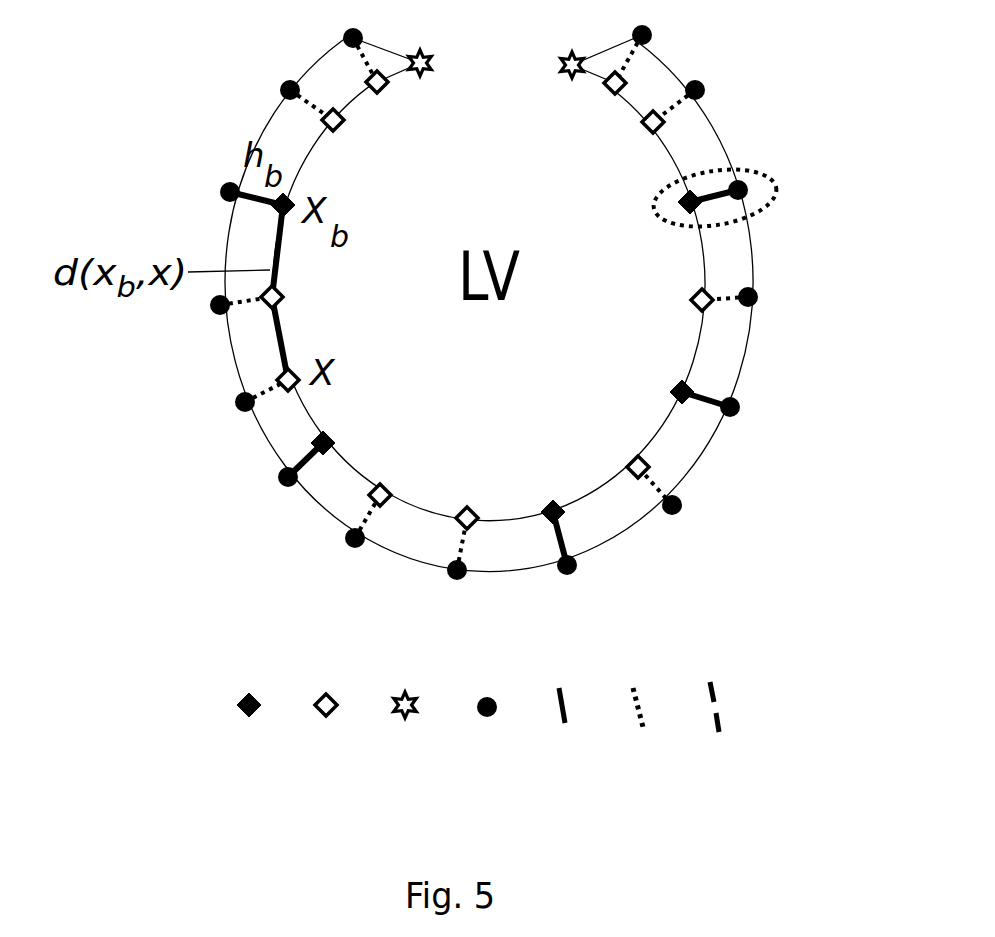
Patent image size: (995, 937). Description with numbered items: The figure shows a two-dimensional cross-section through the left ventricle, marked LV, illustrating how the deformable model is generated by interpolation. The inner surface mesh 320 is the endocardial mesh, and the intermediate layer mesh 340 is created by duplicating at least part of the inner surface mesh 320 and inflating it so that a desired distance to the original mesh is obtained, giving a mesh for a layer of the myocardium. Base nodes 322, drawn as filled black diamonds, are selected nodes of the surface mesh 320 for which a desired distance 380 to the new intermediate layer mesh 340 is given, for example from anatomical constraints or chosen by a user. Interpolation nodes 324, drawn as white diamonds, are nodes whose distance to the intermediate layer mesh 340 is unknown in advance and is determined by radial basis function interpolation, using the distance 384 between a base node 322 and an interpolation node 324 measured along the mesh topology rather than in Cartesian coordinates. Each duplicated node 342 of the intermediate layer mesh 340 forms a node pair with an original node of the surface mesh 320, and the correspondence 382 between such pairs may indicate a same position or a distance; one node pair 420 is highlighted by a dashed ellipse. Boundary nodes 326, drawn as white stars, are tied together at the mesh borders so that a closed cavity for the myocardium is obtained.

The inner surface mesh 320 is at (602, 492).
The intermediate layer mesh 340 is at (623, 540).
The base nodes 322 is at (252, 720).
The interpolation nodes 324 is at (330, 720).
The boundary nodes 326 is at (408, 720).
The duplicated node 342 is at (490, 722).
The desired distance 380 is at (573, 722).
The correspondence 382 is at (648, 725).
The distance between base node and interpolation node 384 is at (727, 722).
The node pair 420 is at (753, 170).